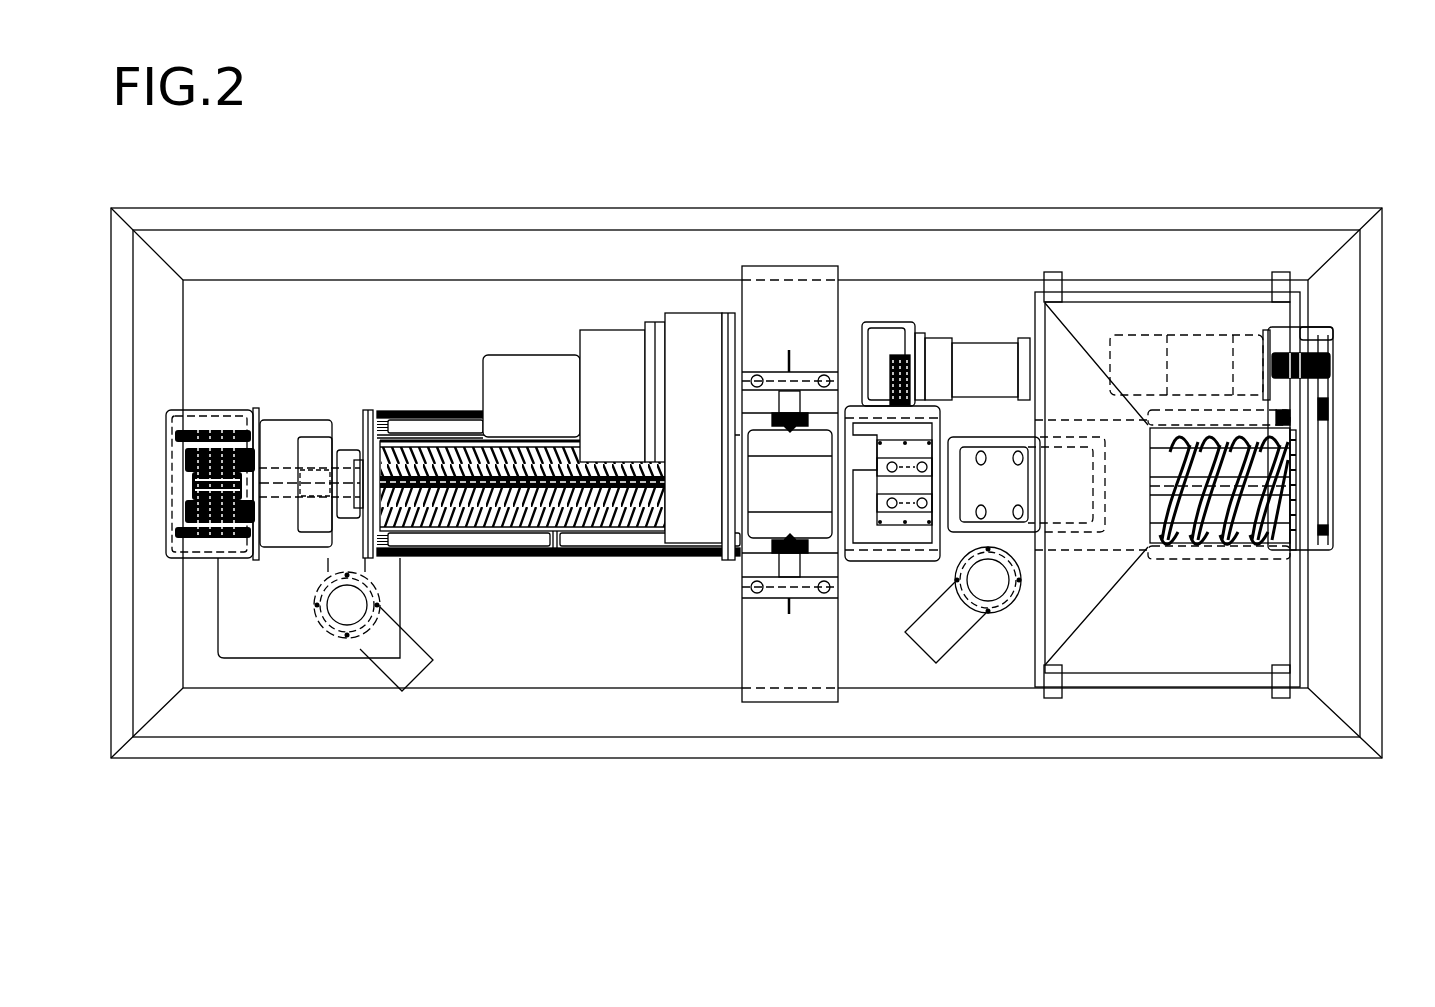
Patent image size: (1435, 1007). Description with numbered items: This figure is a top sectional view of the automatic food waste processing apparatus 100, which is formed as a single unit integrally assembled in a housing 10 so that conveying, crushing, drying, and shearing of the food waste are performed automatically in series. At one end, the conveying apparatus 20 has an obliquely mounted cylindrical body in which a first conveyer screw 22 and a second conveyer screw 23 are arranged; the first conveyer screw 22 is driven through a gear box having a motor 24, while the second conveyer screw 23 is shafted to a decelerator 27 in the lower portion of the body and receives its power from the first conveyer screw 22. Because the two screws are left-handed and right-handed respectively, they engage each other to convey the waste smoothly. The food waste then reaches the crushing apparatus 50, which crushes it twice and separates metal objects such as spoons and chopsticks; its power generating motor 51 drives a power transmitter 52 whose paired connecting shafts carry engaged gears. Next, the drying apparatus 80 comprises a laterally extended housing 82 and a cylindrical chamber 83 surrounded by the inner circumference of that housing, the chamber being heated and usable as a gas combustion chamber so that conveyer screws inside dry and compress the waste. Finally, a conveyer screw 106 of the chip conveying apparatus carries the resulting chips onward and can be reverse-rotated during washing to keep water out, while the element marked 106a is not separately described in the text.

The automatic food waste processing apparatus 100 is at (267, 171).
The housing 10 is at (546, 205).
The conveying apparatus 20 is at (893, 569).
The first conveyer screw 22 is at (1265, 528).
The second conveyer screw 23 is at (1247, 462).
The motor 24 is at (1185, 340).
The decelerator 27 is at (1315, 340).
The crushing apparatus 50 is at (710, 574).
The power generating motor 51 is at (525, 355).
The power transmitter 52 is at (749, 537).
The drying apparatus 80 is at (544, 495).
The housing 82 is at (396, 412).
The cylindrical chamber 83 is at (555, 556).
The conveyer screw 106 is at (428, 548).
The housing inner wall 106a is at (463, 440).